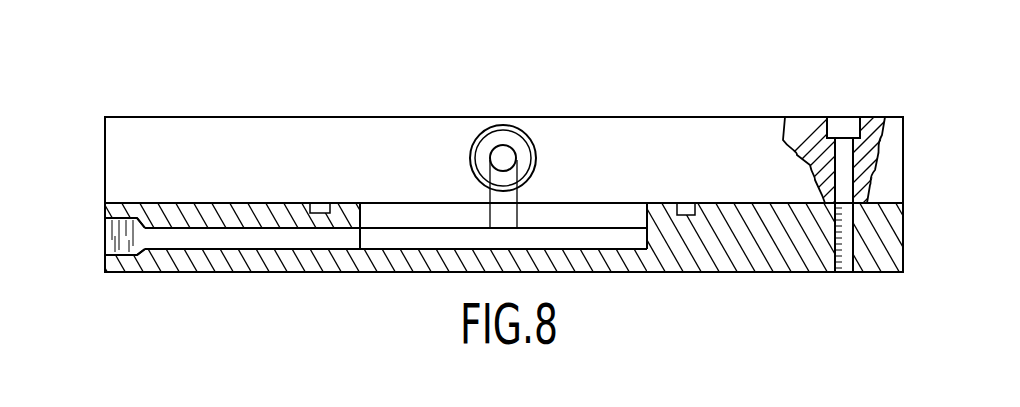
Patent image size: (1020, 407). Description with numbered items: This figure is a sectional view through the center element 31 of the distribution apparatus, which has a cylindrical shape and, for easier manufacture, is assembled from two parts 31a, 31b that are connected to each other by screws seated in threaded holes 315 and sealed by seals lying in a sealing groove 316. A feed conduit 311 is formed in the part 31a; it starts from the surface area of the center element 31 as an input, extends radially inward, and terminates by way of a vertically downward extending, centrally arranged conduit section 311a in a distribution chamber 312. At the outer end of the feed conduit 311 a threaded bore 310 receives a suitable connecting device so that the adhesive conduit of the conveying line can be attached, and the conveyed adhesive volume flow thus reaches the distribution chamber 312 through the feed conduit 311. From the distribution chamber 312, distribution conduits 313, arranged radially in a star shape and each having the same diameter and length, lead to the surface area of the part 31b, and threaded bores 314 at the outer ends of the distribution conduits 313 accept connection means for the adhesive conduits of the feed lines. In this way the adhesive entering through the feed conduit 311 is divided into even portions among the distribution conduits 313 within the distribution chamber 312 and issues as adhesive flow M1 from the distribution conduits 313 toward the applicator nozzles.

The center element 31 is at (660, 118).
The part of the center element 31a is at (732, 117).
The part of the center element 31b is at (730, 272).
The threaded bore 310 is at (531, 126).
The feed conduit 311 is at (517, 159).
The conduit section 311a is at (488, 196).
The distribution chamber 312 is at (570, 242).
The distribution conduits 313 is at (250, 240).
The threaded bores 314 is at (123, 249).
The threaded holes 315 is at (850, 121).
The sealing groove 316 is at (687, 206).
The adhesive flow M1 is at (88, 238).